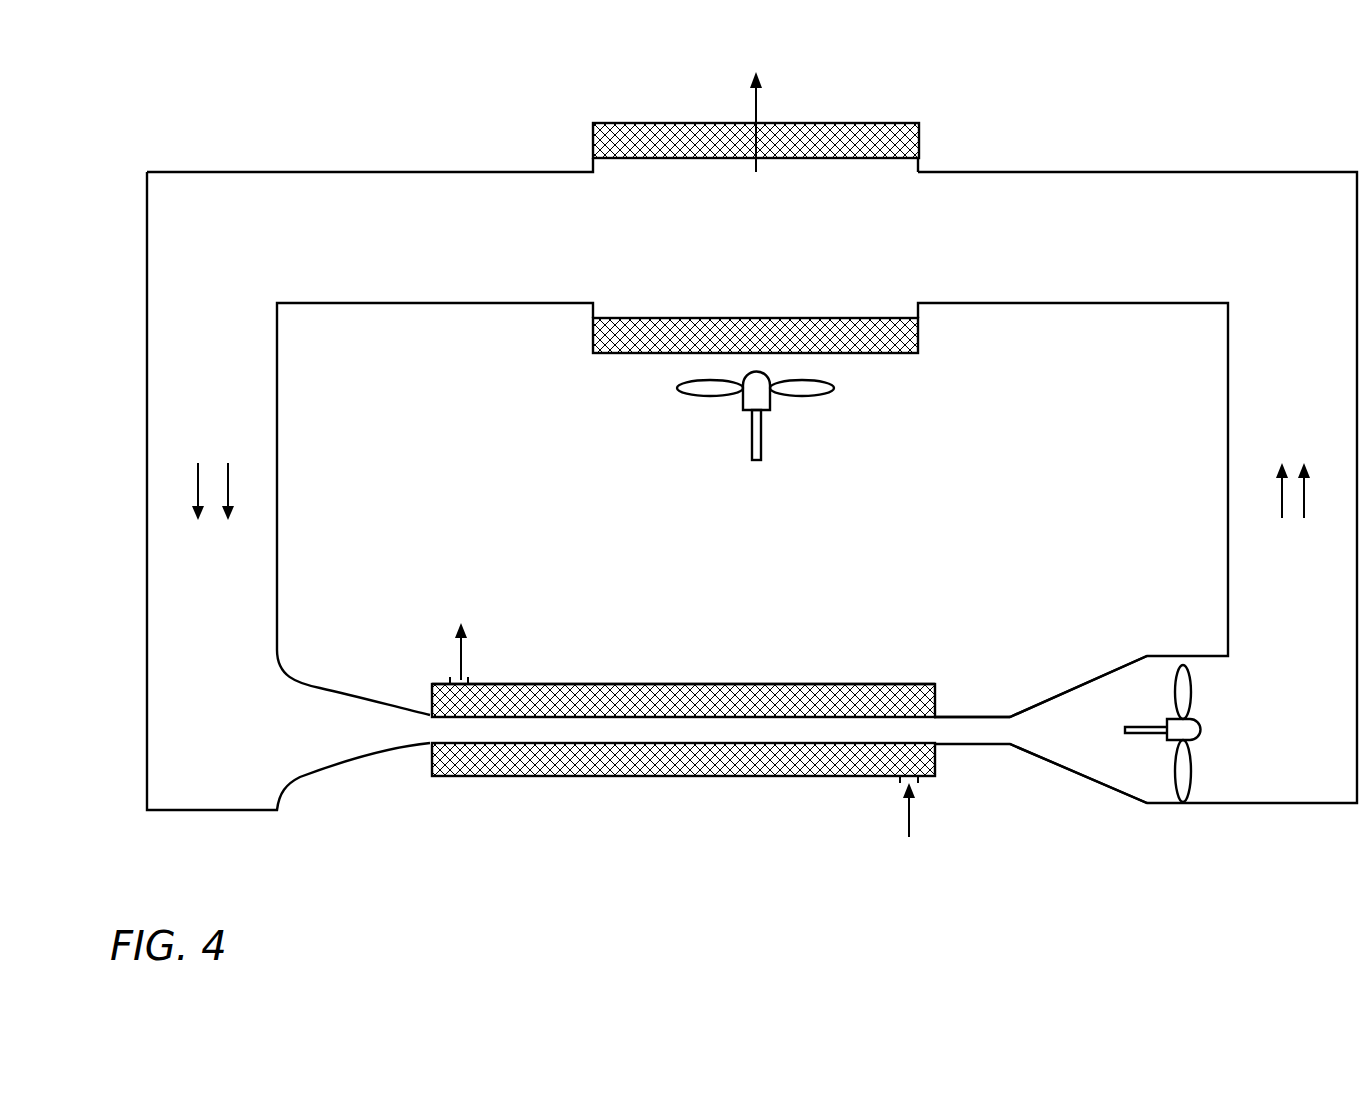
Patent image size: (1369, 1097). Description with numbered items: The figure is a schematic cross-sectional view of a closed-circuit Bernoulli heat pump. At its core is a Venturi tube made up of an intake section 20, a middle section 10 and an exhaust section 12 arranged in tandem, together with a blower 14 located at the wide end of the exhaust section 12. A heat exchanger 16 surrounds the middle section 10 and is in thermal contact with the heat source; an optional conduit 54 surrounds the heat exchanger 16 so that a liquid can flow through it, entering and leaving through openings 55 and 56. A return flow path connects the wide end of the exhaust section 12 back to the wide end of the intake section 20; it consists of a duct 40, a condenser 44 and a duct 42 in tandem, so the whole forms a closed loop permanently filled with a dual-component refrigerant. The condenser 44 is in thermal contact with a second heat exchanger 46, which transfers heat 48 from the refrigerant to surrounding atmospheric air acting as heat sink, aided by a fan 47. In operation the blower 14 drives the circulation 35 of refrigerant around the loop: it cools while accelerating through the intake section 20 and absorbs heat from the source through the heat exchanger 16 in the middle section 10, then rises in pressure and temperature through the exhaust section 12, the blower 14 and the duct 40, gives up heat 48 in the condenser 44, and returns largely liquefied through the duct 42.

The middle section 10 is at (975, 715).
The exhaust section 12 is at (1068, 688).
The blower 14 is at (1185, 803).
The heat exchanger 16 is at (757, 684).
The intake section 20 is at (322, 688).
The circulation of refrigerant 35 is at (228, 484).
The duct 40 is at (1115, 172).
The duct 42 is at (370, 172).
The condenser 44 is at (902, 196).
The second heat exchanger 46 is at (652, 128).
The fan 47 is at (716, 398).
The heat 48 is at (757, 104).
The conduit 54 is at (620, 684).
The opening 55 is at (900, 778).
The opening 56 is at (470, 680).